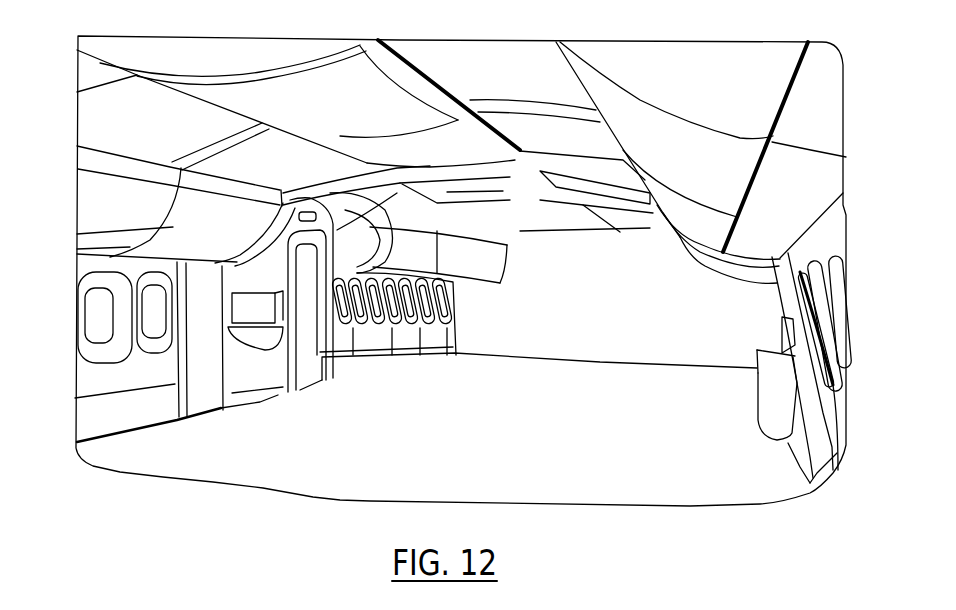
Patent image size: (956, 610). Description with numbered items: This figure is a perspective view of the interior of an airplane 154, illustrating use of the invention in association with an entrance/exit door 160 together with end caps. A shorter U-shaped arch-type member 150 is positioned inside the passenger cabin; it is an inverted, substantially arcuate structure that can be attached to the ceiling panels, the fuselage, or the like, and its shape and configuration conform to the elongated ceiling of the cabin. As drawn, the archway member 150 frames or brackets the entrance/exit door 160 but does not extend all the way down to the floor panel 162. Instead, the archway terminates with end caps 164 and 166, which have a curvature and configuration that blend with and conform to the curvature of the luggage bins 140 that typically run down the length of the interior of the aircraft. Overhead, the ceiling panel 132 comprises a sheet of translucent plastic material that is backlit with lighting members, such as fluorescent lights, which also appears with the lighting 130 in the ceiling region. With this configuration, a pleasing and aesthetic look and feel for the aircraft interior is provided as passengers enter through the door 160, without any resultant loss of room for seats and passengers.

The ceiling lighting panel 130 is at (463, 193).
The ceiling panel 132 is at (538, 207).
The luggage bins 140 is at (90, 218).
The U-shaped arch-type member 150 is at (321, 169).
The interior of an airplane 154 is at (227, 518).
The entrance/exit door 160 is at (260, 383).
The floor panel 162 is at (580, 447).
The end cap 164 is at (272, 241).
The end cap 166 is at (326, 380).